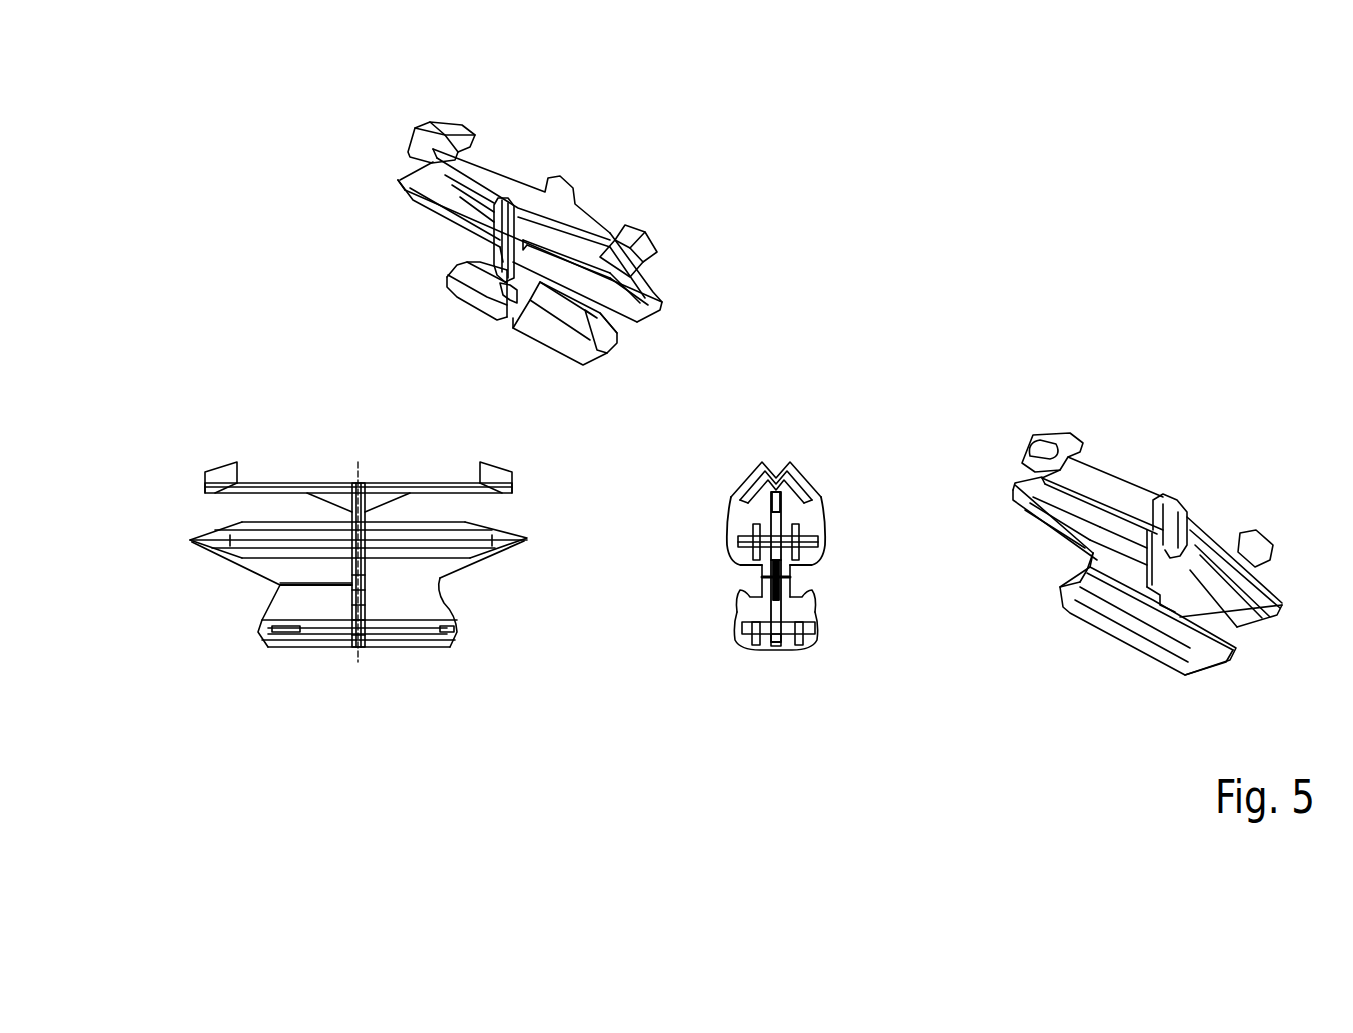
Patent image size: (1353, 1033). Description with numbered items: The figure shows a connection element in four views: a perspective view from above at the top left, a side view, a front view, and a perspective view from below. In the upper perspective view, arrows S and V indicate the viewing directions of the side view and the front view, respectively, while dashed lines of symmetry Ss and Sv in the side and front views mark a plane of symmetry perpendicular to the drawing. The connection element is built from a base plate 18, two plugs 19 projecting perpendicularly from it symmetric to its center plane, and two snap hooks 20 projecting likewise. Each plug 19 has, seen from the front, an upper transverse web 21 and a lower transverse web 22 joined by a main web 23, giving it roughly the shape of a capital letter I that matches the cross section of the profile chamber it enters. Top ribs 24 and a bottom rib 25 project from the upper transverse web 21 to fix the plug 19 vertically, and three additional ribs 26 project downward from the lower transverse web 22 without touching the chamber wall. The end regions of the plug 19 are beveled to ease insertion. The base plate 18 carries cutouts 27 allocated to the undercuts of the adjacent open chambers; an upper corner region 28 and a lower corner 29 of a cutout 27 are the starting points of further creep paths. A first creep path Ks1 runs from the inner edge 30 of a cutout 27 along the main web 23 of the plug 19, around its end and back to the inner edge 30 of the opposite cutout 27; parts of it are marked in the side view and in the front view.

The base plate 18 is at (358, 647).
The plug 19 is at (263, 568).
The snap hook 20 is at (270, 490).
The upper transverse web 21 is at (196, 540).
The lower transverse web 22 is at (278, 622).
The main web 23 is at (310, 601).
The top rib 24 is at (243, 528).
The bottom rib 25 is at (790, 570).
The additional rib 26 is at (315, 637).
The cutout 27 is at (748, 581).
The region of an upper corner of the cutout 28 is at (1180, 557).
The lower corner of the cutout 29 is at (738, 612).
The inner edge 30 is at (366, 577).
The side view direction arrow S is at (588, 163).
The front view direction arrow V is at (366, 136).
The line of symmetry of the side view Ss is at (357, 478).
The line of symmetry of the front view Sv is at (776, 660).
The first creep path Ks1 is at (863, 553).